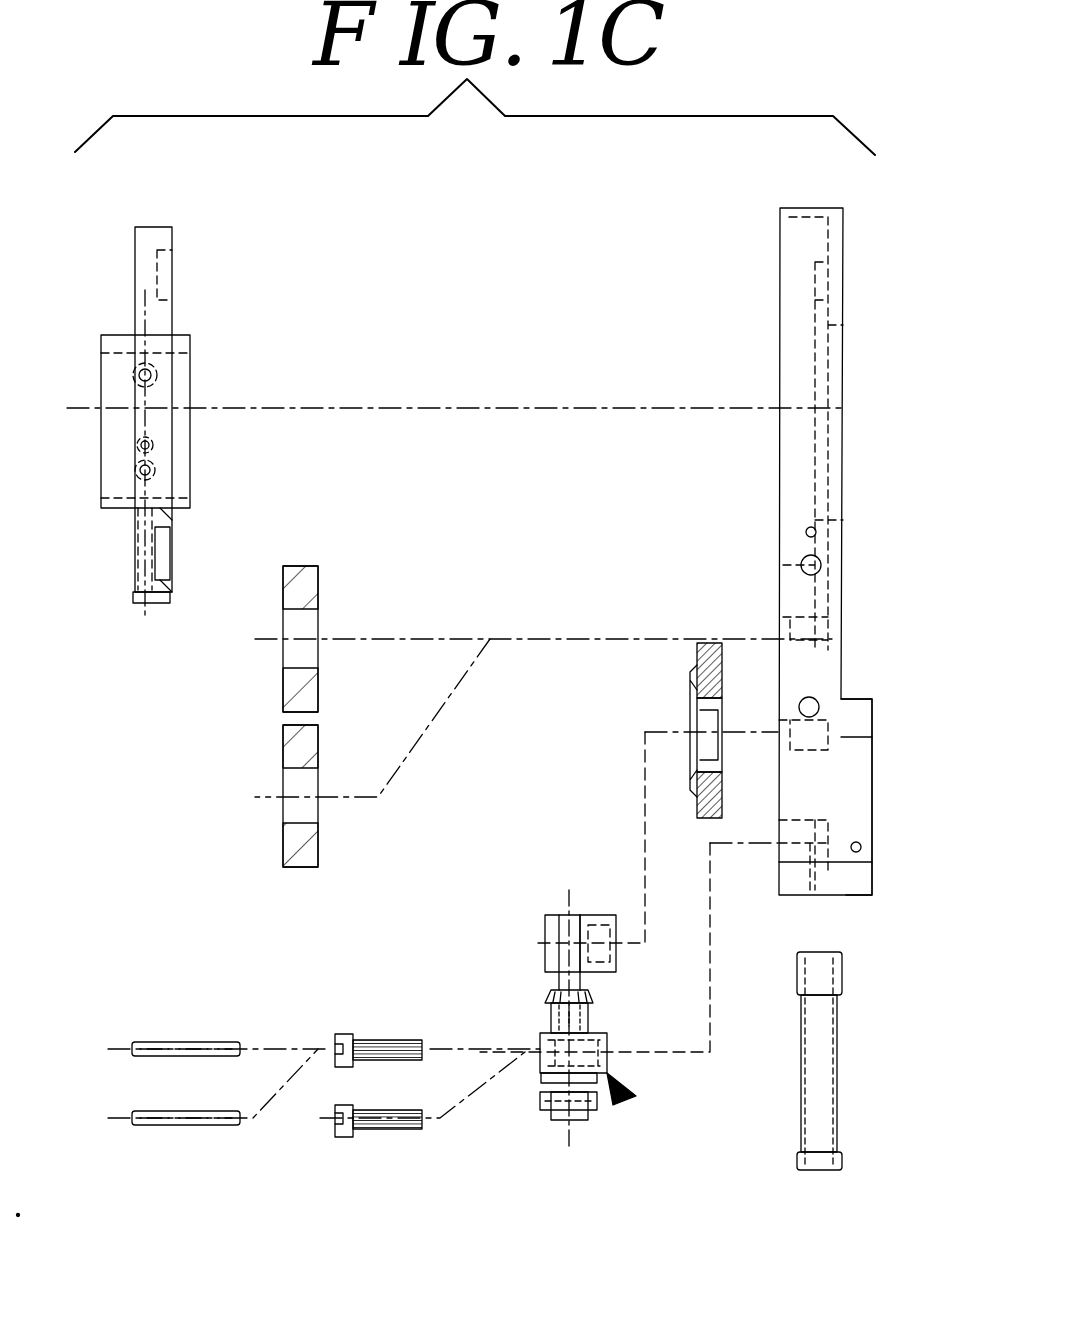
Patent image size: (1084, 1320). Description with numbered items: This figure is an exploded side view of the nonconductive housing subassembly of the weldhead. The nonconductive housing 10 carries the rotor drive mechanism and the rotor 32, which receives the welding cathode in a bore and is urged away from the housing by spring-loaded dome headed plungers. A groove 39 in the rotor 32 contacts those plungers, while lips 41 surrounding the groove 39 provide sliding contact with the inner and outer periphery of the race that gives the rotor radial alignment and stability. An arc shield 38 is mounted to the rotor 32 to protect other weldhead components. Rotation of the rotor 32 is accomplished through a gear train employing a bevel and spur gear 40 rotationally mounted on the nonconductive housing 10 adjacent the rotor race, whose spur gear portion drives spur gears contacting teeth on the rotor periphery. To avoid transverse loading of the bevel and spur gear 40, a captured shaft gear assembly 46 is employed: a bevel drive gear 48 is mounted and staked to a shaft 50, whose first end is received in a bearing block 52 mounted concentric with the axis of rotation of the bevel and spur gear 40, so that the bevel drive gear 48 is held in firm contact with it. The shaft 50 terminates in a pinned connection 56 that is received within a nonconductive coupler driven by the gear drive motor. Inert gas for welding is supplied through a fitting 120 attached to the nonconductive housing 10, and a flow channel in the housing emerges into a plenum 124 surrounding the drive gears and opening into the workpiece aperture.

The nonconductive housing 10 is at (810, 208).
The rotor 32 is at (157, 227).
The arc shield 38 is at (115, 335).
The groove 39 is at (172, 550).
The lips 41 is at (172, 520).
The bevel and spur gear 40 is at (712, 640).
The bearing block 52 is at (590, 915).
The shaft 50 is at (555, 982).
The bevel drive gear 48 is at (590, 990).
The captured shaft gear assembly 46 is at (624, 1100).
The pinned connection 56 is at (575, 1122).
The fitting 120 is at (838, 1077).
The plenum 124 is at (802, 777).